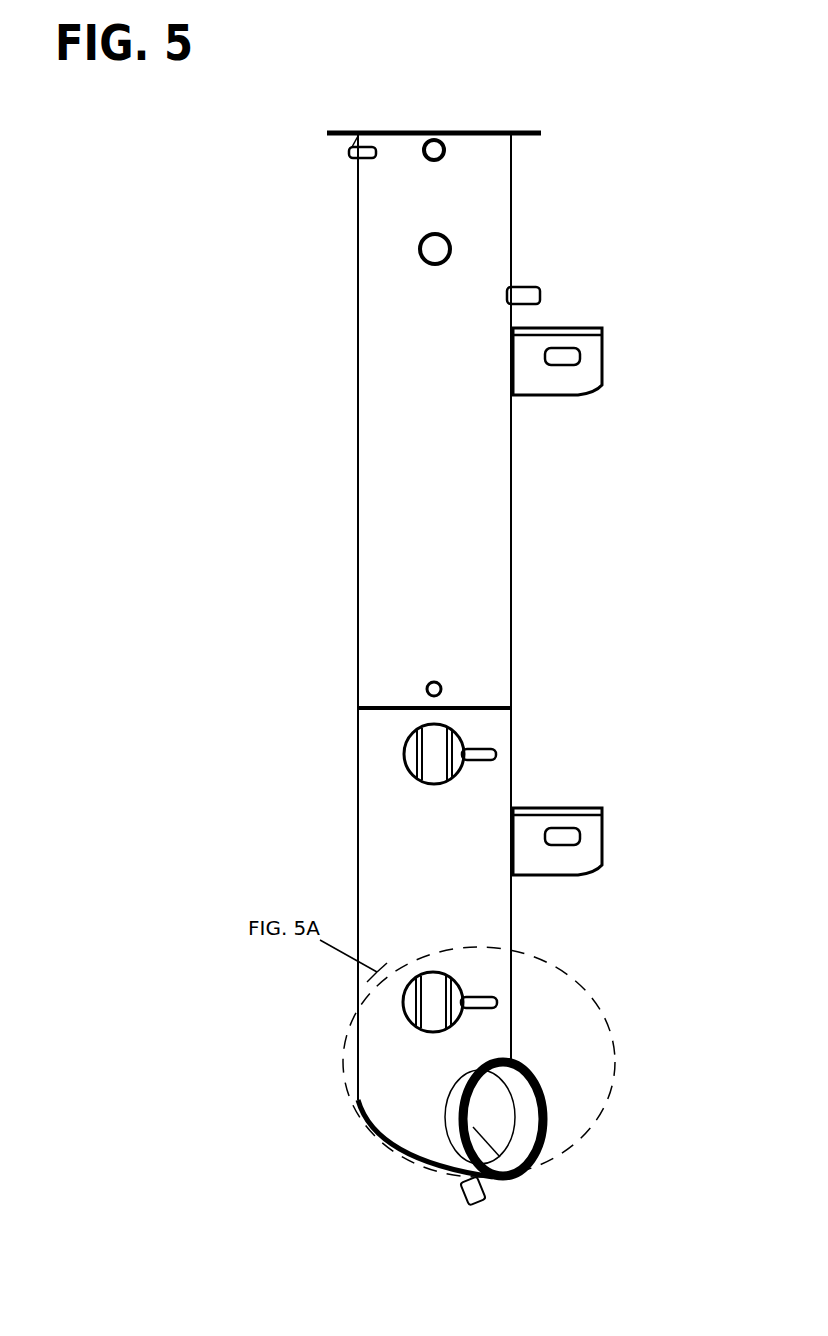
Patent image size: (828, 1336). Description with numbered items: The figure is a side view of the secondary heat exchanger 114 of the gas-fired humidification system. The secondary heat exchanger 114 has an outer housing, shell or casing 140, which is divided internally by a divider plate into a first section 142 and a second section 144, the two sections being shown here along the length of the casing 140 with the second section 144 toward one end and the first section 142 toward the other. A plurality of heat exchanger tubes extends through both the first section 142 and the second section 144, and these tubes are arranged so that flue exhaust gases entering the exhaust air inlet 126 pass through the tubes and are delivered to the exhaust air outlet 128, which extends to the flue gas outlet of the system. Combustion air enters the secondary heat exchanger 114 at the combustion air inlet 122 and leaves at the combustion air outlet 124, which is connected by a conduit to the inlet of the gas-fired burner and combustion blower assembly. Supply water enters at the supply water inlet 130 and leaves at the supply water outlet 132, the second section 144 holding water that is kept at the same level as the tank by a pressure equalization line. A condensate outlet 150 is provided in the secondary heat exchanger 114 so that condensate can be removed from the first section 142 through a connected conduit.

The secondary heat exchanger 114 is at (244, 291).
The exhaust air outlet 128 is at (516, 135).
The supply water inlet 130 is at (432, 248).
The second section 144 is at (504, 458).
The outer housing, shell or casing 140 is at (488, 555).
The supply water outlet 132 is at (446, 689).
The combustion air inlet 122 is at (421, 728).
The first section 142 is at (506, 906).
The combustion air outlet 124 is at (402, 1008).
The exhaust air inlet 126 is at (515, 1103).
The condensate outlet 150 is at (463, 1193).